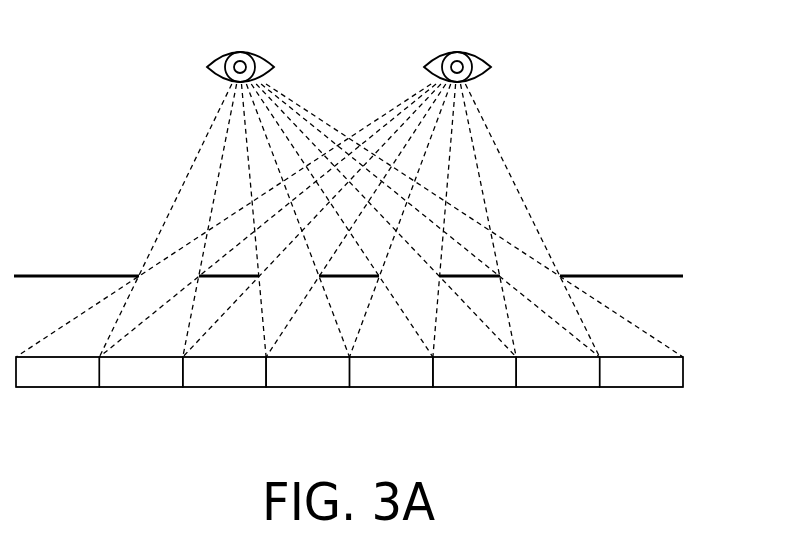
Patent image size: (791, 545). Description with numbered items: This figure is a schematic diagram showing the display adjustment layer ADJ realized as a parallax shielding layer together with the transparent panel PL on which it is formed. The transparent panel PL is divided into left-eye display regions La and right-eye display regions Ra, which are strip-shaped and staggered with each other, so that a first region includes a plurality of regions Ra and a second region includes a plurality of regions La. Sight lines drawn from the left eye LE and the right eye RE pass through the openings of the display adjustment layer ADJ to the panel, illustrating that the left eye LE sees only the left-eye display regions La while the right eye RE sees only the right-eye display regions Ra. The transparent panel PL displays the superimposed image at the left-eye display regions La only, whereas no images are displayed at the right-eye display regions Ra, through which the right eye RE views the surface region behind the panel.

The left eye LE is at (265, 60).
The right eye RE is at (482, 60).
The display adjustment layer ADJ is at (661, 277).
The transparent panel PL is at (683, 370).
The right-eye display regions Ra is at (308, 390).
The left-eye display regions La is at (391, 390).